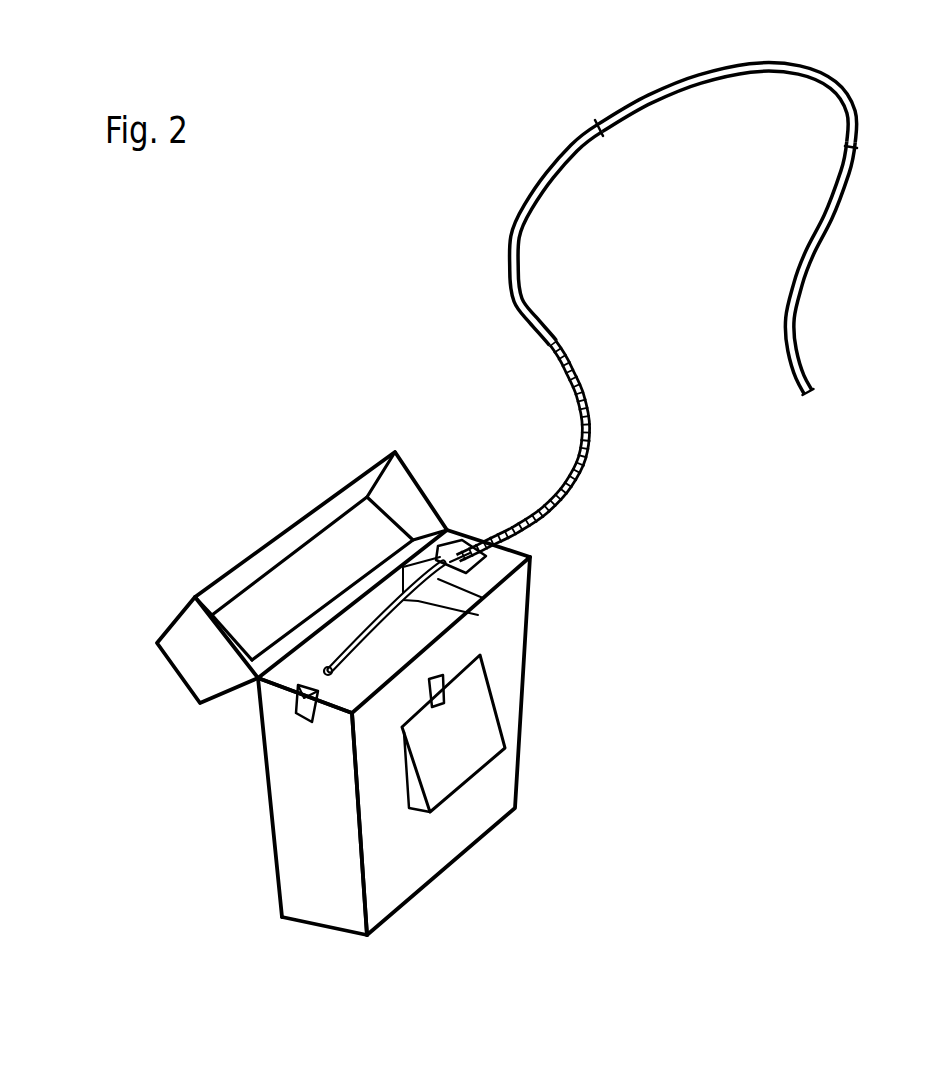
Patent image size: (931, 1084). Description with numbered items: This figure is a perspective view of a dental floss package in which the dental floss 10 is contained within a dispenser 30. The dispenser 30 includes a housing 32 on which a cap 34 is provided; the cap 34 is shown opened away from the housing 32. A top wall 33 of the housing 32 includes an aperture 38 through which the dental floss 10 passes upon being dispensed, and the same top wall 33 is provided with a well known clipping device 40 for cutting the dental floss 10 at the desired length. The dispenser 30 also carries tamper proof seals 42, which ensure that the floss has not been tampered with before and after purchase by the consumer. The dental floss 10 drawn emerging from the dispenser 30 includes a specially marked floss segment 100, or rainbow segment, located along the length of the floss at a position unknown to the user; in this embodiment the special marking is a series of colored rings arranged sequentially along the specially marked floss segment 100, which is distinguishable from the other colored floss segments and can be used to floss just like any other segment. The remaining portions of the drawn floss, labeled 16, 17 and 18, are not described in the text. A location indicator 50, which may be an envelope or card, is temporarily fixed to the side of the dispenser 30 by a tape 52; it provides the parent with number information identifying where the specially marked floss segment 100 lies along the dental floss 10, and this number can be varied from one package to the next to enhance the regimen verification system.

The dental floss 10 is at (648, 284).
The first end section of hose 16 is at (813, 267).
The hose tube 17 is at (756, 62).
The second end section of hose 18 is at (523, 229).
The specially marked floss segment 100 is at (588, 437).
The dispenser 30 is at (344, 683).
The housing 32 is at (528, 668).
The top wall 33 is at (337, 713).
The cap 34 is at (400, 452).
The aperture 38 is at (293, 678).
The clipping device 40 is at (487, 566).
The tamper proof seals 42 is at (297, 713).
The location indicator 50 is at (492, 720).
The tape 52 is at (435, 678).